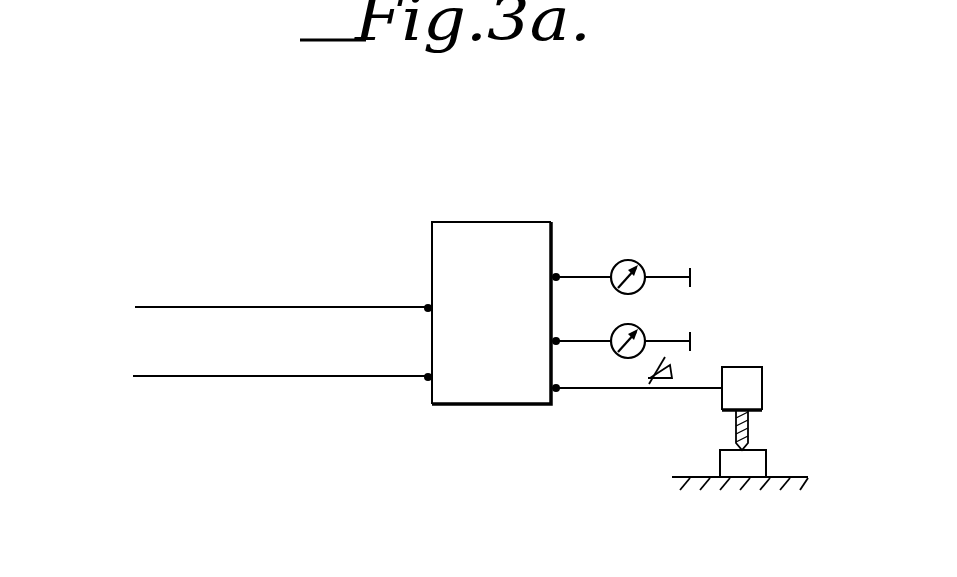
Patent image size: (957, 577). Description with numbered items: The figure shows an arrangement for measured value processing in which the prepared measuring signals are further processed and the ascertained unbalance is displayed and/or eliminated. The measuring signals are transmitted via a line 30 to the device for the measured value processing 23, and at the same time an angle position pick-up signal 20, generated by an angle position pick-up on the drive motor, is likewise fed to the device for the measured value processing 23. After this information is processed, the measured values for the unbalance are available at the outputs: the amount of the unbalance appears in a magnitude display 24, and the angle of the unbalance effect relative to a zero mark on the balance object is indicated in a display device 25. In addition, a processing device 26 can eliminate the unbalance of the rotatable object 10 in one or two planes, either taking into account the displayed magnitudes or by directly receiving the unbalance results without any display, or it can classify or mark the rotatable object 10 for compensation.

The rotatable object 10 is at (748, 462).
The angle position pick-up signal 20 is at (280, 405).
The device for measured value processing 23 is at (496, 250).
The magnitude display 24 is at (636, 263).
The display device 25 is at (640, 328).
The processing device 26 is at (745, 388).
The line 30 is at (215, 305).